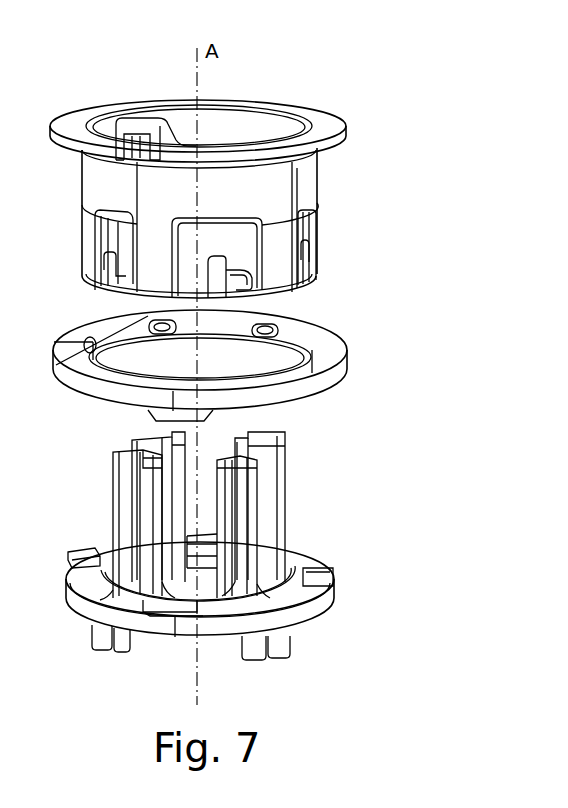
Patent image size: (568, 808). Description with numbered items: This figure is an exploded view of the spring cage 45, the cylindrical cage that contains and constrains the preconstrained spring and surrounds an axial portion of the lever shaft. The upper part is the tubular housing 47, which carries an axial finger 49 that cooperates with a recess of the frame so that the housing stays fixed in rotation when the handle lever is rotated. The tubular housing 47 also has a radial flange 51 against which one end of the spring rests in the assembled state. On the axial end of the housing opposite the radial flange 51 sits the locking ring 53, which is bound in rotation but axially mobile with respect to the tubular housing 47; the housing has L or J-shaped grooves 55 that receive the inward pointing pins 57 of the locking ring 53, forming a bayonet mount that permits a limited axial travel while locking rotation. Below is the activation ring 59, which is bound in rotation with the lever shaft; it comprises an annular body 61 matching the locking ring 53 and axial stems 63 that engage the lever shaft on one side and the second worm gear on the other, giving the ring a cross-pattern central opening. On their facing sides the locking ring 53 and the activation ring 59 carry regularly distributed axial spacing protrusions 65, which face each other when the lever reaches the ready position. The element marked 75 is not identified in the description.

The spring cage 45 is at (269, 91).
The tubular housing 47 is at (318, 172).
The axial finger 49 is at (113, 120).
The radial flange 51 is at (350, 134).
The locking ring 53 is at (342, 352).
The L or J-shaped grooves 55 is at (197, 243).
The inward pointing pins 57 is at (147, 314).
The activation ring 59 is at (69, 619).
The annular body 61 is at (313, 558).
The axial stems 63 is at (283, 474).
The axial spacing protrusions 65 is at (148, 420).
The tab 75 is at (78, 553).